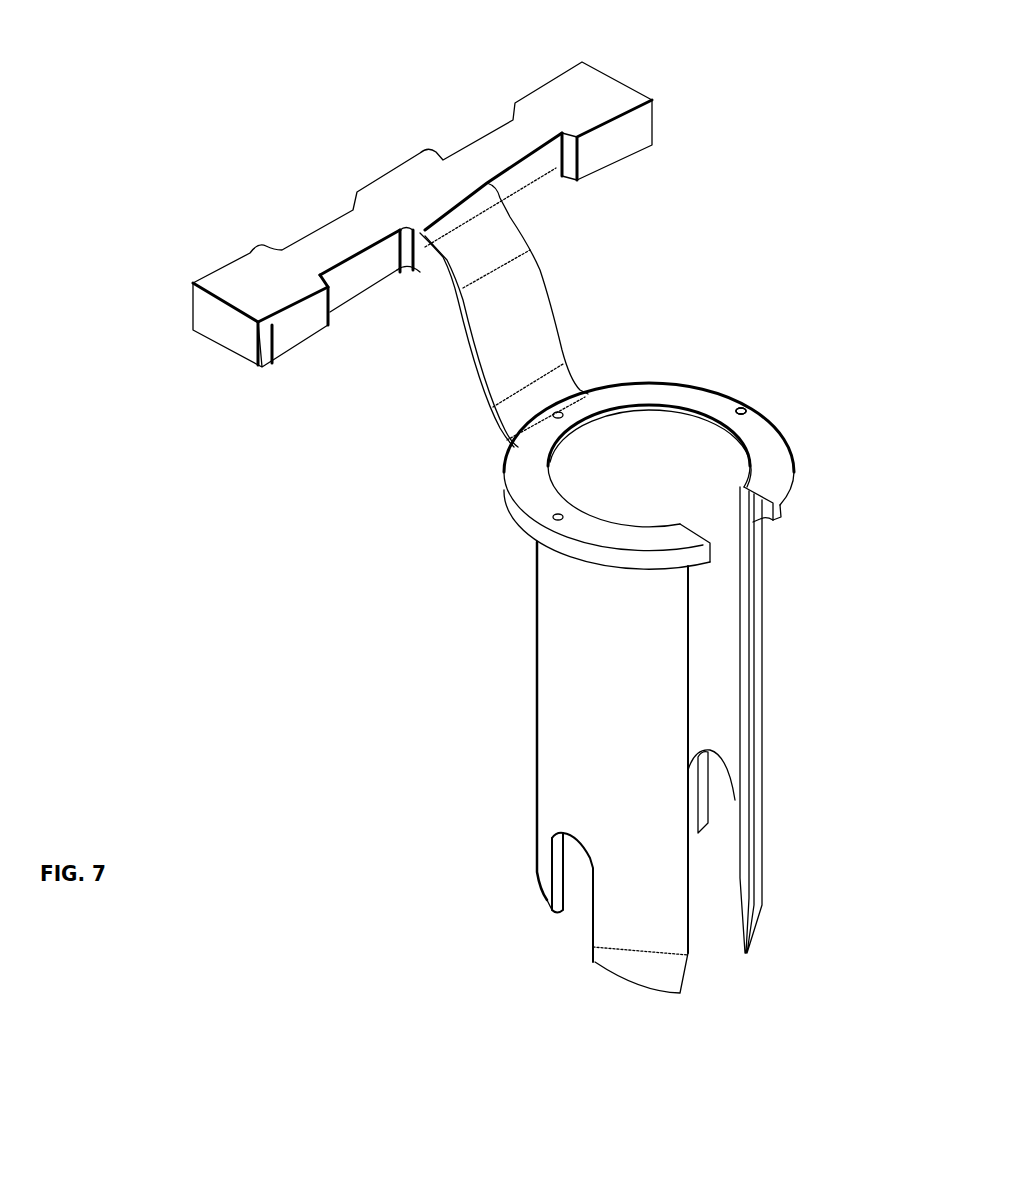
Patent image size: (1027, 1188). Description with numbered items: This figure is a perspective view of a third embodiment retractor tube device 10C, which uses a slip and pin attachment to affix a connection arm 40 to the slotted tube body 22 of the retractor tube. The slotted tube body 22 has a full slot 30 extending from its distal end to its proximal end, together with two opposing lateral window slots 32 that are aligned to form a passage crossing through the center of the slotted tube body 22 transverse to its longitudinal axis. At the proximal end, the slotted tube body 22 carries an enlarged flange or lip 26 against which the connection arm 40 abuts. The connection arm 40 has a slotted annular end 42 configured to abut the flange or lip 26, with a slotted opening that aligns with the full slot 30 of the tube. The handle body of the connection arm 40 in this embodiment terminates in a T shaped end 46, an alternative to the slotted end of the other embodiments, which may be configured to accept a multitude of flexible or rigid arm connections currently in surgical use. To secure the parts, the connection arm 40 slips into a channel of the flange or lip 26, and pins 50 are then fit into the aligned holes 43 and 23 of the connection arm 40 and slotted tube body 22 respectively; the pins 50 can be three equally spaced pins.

The retractor tube device 10C is at (170, 69).
The T shaped end 46 is at (238, 272).
The connection arm 40 is at (567, 299).
The slotted annular end 42 is at (698, 386).
The pins 50 is at (744, 408).
The holes 23 is at (746, 411).
The holes 43 is at (741, 411).
The flange or lip 26 is at (783, 517).
The slotted tube body 22 is at (565, 705).
The lateral window slots 32 is at (562, 928).
The full slot 30 is at (714, 948).